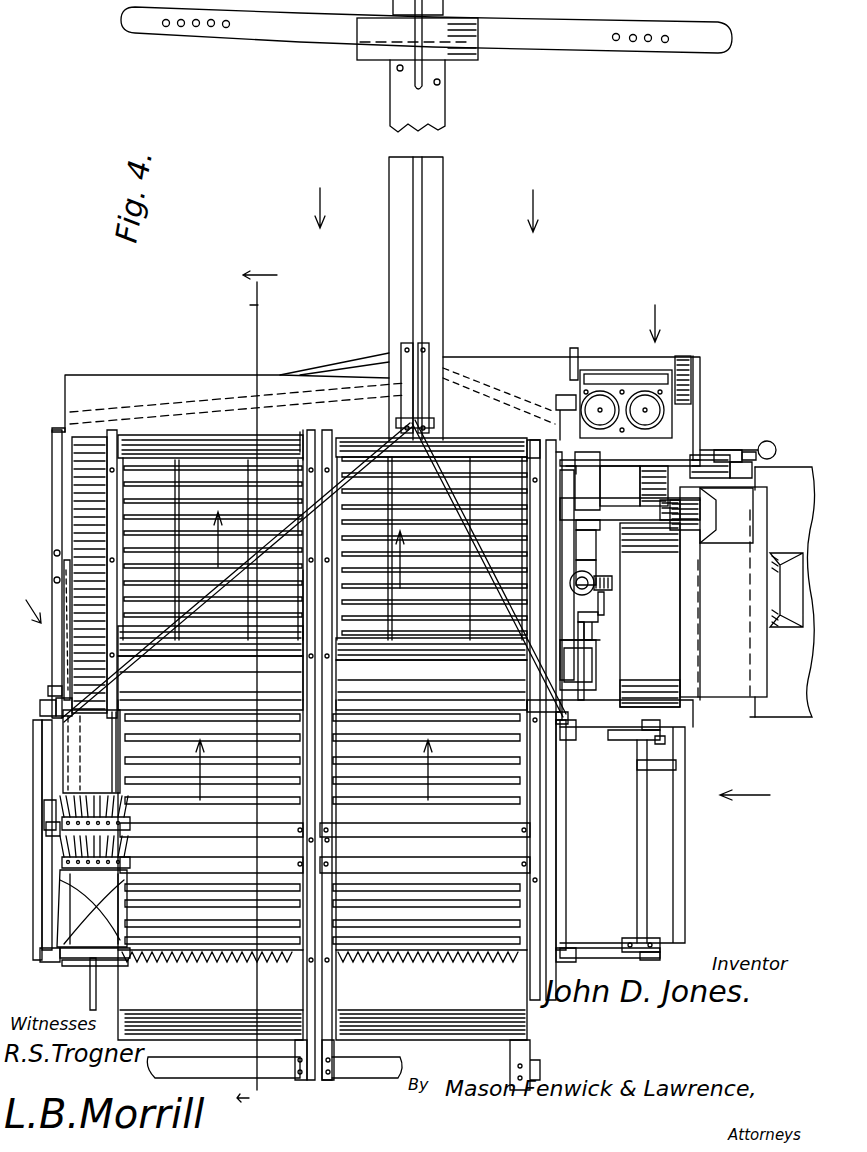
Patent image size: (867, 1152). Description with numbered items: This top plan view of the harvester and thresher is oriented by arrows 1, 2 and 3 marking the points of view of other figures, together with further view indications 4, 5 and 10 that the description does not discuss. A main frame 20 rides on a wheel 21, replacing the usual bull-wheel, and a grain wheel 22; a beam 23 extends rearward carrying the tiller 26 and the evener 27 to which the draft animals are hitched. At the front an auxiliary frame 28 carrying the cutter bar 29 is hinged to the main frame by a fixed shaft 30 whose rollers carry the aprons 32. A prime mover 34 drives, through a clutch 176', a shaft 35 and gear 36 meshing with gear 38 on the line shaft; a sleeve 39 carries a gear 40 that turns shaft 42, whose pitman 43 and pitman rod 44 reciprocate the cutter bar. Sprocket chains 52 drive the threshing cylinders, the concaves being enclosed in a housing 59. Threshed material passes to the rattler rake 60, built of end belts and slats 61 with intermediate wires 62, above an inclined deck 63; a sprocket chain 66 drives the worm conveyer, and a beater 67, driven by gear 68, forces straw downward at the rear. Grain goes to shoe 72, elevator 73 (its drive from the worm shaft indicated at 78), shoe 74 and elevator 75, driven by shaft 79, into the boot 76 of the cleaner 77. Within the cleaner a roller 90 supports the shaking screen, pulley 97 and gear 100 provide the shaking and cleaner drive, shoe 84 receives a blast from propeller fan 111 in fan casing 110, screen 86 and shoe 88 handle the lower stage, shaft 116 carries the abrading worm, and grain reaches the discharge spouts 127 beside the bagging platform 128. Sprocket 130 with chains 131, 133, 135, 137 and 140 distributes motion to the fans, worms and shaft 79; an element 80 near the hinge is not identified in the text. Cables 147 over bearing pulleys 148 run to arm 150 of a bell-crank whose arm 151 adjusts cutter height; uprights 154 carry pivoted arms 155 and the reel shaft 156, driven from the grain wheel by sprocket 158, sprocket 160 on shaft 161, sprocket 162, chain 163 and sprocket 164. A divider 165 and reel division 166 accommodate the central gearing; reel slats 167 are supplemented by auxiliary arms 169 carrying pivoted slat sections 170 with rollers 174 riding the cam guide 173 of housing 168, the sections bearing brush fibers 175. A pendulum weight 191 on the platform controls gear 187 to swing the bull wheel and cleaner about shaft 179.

The arrow 1 is at (761, 799).
The arrow 2 is at (315, 196).
The arrow 3 is at (22, 608).
The section line 4 is at (251, 679).
The section line 5 is at (244, 703).
The section line 10 is at (652, 306).
The main frame 20 is at (712, 730).
The wheel 21 is at (642, 760).
The grain wheel 22 is at (68, 428).
The beam 23 is at (442, 236).
The tiller 26 is at (422, 60).
The evener 27 is at (582, 48).
The auxiliary frame 28 is at (56, 762).
The cutter bar 29 is at (390, 958).
The shaft 30 is at (627, 751).
The aprons 32 is at (322, 995).
The prime mover 34 is at (622, 372).
The shaft 35 is at (526, 452).
The gear 36 is at (536, 716).
The gear 38 is at (510, 715).
The rod 39 is at (588, 666).
The gear 40 is at (658, 736).
The shaft 42 is at (651, 841).
The pitman 43 is at (630, 945).
The pitman rod 44 is at (590, 950).
The sprocket chains 52 is at (340, 688).
The housing 59 is at (62, 556).
The rattler rake 60 is at (170, 520).
The slat support 61 is at (348, 548).
The intermediate wires 62 is at (196, 520).
The inclined deck 63 is at (66, 816).
The sprocket chain 66 is at (617, 486).
The beater 67 is at (186, 436).
The gear 68 is at (300, 440).
The shoe 72 is at (586, 654).
The elevator 73 is at (578, 575).
The shoe 74 is at (626, 481).
The elevator 75 is at (650, 618).
The boot 76 is at (748, 512).
The cleaner 77 is at (723, 592).
The conveyer drive 78 is at (520, 567).
The shaft 79 is at (630, 512).
The lug 80 is at (668, 740).
The shoe 84 is at (572, 665).
The screen 86 is at (580, 520).
The shoe 88 is at (578, 545).
The roller 90 is at (604, 598).
The pulley 97 is at (580, 590).
The gear 100 is at (590, 622).
The fan casing 110 is at (745, 442).
The propeller fan 111 is at (650, 696).
The shaft 116 is at (560, 398).
The discharge spouts 127 is at (800, 628).
The platform 128 is at (812, 466).
The sprocket 130 is at (558, 452).
The sprocket chain 131 is at (642, 482).
The sprocket chain 133 is at (694, 385).
The sprocket chain 135 is at (706, 456).
The sprocket chain 137 is at (744, 448).
The sprocket chain 140 is at (722, 452).
The cables 147 is at (140, 650).
The bearing pulleys 148 is at (58, 672).
The arm 150 is at (404, 428).
The arm 151 is at (414, 272).
The uprights 154 is at (56, 708).
The pivoted arms 155 is at (44, 862).
The reel shaft 156 is at (46, 954).
The sprocket 158 is at (89, 575).
The sprocket 160 is at (66, 668).
The shaft 161 is at (82, 560).
The sprocket 162 is at (50, 688).
The chain 163 is at (48, 800).
The sprocket 164 is at (72, 964).
The divider 165 is at (340, 762).
The reel division 166 is at (306, 1070).
The reel slats 167 is at (366, 1078).
The housing 168 is at (112, 962).
The auxiliary pivoted reel arms 169 is at (92, 962).
The pivoted slat sections 170 is at (112, 852).
The track or cam guide 173 is at (56, 896).
The rollers 174 is at (50, 828).
The brush fibers 175 is at (91, 751).
The clutch 176' is at (568, 328).
The shaft 179 is at (692, 600).
The gear 187 is at (570, 470).
The pendulum weight 191 is at (770, 442).